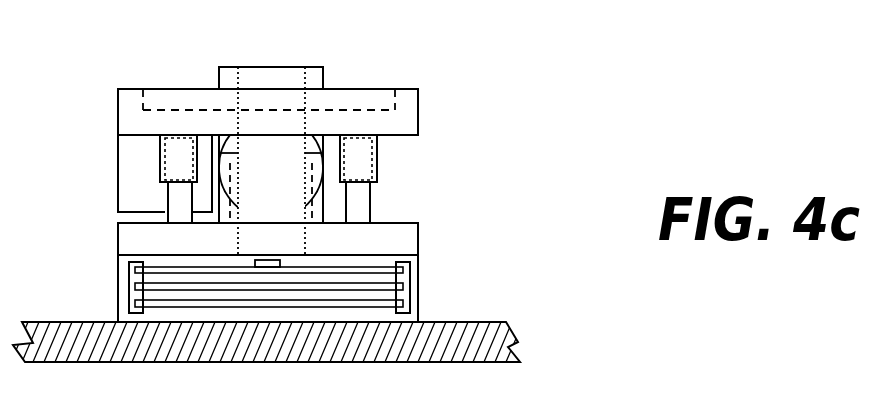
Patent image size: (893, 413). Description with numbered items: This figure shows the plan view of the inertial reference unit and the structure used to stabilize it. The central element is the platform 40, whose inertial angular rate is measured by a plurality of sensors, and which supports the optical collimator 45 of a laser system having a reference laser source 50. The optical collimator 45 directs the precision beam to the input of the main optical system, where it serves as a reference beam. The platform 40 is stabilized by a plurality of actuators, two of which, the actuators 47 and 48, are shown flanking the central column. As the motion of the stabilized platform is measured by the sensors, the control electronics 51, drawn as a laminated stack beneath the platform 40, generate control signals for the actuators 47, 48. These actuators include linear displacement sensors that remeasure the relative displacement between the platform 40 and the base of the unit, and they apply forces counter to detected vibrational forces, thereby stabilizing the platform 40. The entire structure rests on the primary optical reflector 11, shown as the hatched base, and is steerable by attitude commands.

The primary optical reflector 11 is at (508, 322).
The platform 40 is at (418, 115).
The optical collimator 45 is at (313, 67).
The actuator 47 is at (377, 152).
The actuator 48 is at (163, 173).
The reference laser source 50 is at (257, 260).
The control electronics 51 is at (410, 275).